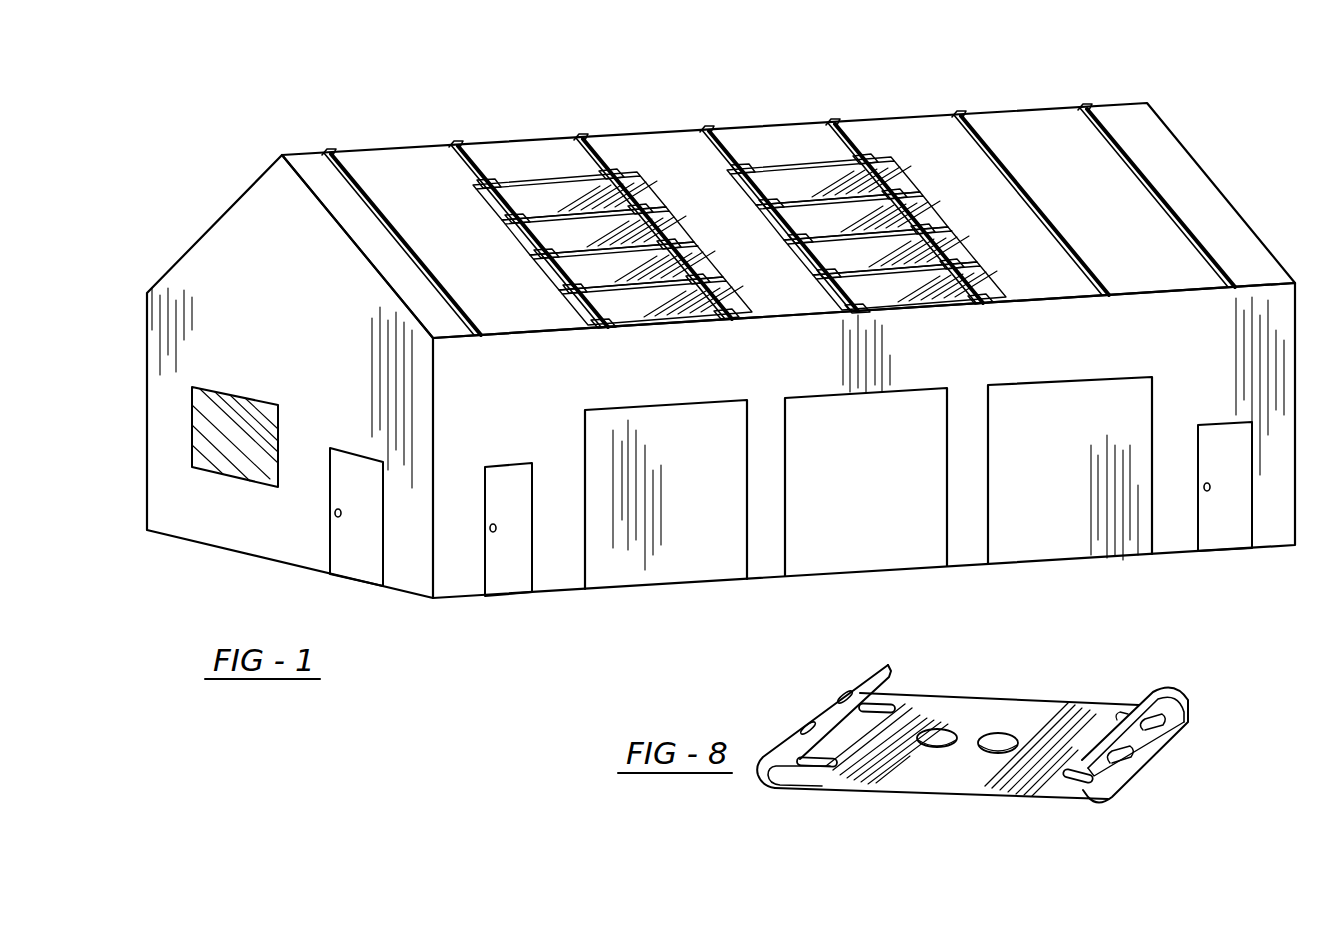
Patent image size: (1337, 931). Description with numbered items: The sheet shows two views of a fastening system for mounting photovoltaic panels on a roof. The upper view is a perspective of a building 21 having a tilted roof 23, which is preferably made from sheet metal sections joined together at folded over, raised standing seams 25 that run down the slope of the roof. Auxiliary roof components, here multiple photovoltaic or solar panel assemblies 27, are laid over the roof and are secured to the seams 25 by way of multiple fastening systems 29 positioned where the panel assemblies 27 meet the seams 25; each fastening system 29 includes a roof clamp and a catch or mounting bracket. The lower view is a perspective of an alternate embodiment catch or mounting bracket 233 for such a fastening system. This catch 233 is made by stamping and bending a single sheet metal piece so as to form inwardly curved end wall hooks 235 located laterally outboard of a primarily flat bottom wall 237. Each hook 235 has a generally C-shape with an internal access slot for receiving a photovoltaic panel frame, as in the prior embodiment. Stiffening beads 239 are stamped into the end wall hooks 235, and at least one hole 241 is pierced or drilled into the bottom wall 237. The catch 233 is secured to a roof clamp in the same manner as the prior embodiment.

In FIG. 1, the building 21 is at (302, 318).
In FIG. 1, the tilted roof 23 is at (400, 167).
In FIG. 1, the standing seams 25 is at (330, 148).
In FIG. 1, the photovoltaic panel assemblies 27 is at (532, 193).
In FIG. 1, the fastening systems 29 is at (650, 206).
In FIG. 8, the catch or mounting bracket 233 is at (996, 664).
In FIG. 8, the end wall hooks 235 is at (864, 680).
In FIG. 8, the bottom wall 237 is at (984, 762).
In FIG. 8, the stiffening beads 239 is at (817, 767).
In FIG. 8, the hole 241 is at (930, 748).